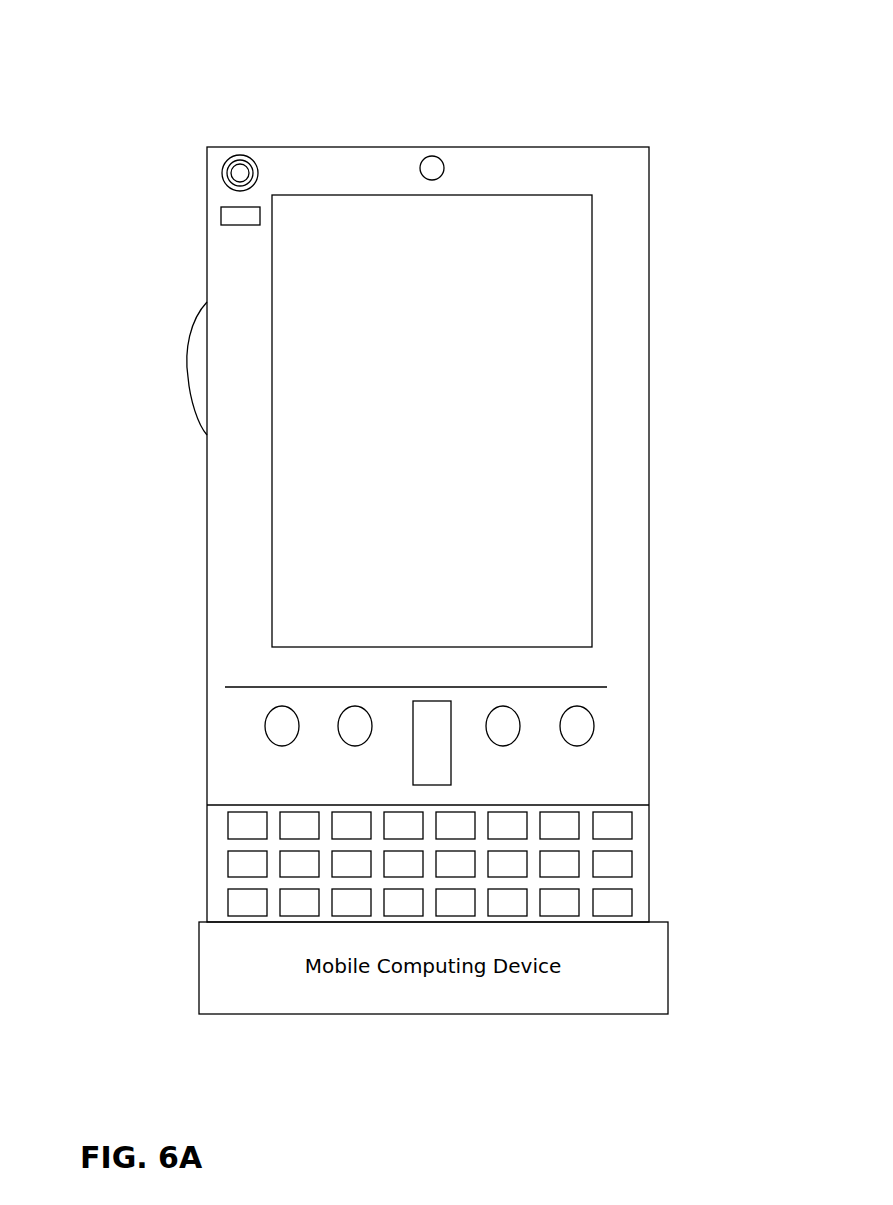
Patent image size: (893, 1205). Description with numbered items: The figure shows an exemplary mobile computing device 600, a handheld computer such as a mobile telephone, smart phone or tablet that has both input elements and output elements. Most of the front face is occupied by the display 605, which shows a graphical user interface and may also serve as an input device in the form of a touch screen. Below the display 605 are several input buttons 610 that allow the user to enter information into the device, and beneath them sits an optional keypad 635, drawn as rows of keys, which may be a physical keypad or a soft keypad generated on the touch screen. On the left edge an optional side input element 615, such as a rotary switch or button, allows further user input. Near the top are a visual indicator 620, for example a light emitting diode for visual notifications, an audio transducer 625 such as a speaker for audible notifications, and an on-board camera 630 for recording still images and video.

The mobile computing device 600 is at (638, 162).
The display 605 is at (370, 570).
The input buttons 610 is at (431, 748).
The side input element 615 is at (198, 368).
The visual indicator 620 is at (222, 220).
The audio transducer 625 is at (222, 173).
The on-board camera 630 is at (444, 168).
The keypad 635 is at (215, 906).